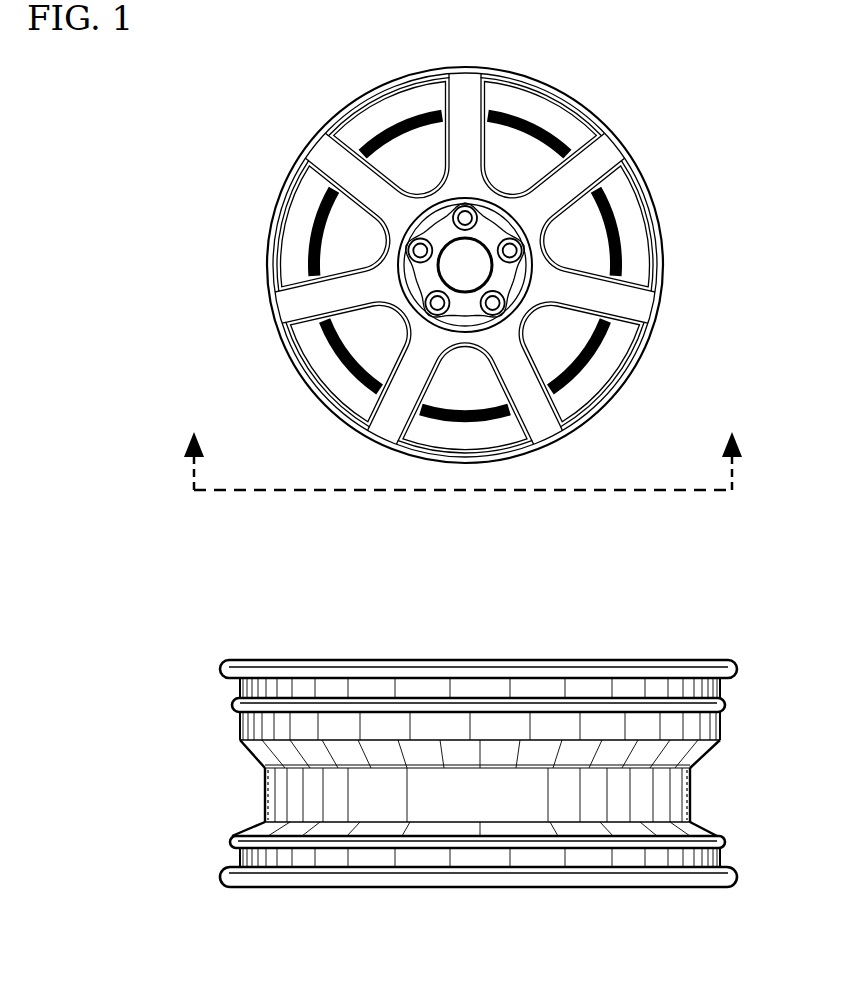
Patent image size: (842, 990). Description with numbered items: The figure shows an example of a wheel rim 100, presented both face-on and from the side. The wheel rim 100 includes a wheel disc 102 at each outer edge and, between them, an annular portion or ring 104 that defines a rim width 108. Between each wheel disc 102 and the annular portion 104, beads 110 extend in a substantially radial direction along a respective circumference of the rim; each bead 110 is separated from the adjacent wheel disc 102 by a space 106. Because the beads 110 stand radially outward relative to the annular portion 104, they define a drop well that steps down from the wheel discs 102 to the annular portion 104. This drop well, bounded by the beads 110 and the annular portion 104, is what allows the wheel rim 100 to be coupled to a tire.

The wheel rim 100 is at (172, 627).
The wheel disc 102 is at (674, 666).
The annular portion or ring 104 is at (520, 798).
The space 106 is at (240, 687).
The rim width 108 is at (693, 786).
The beads 110 is at (725, 703).